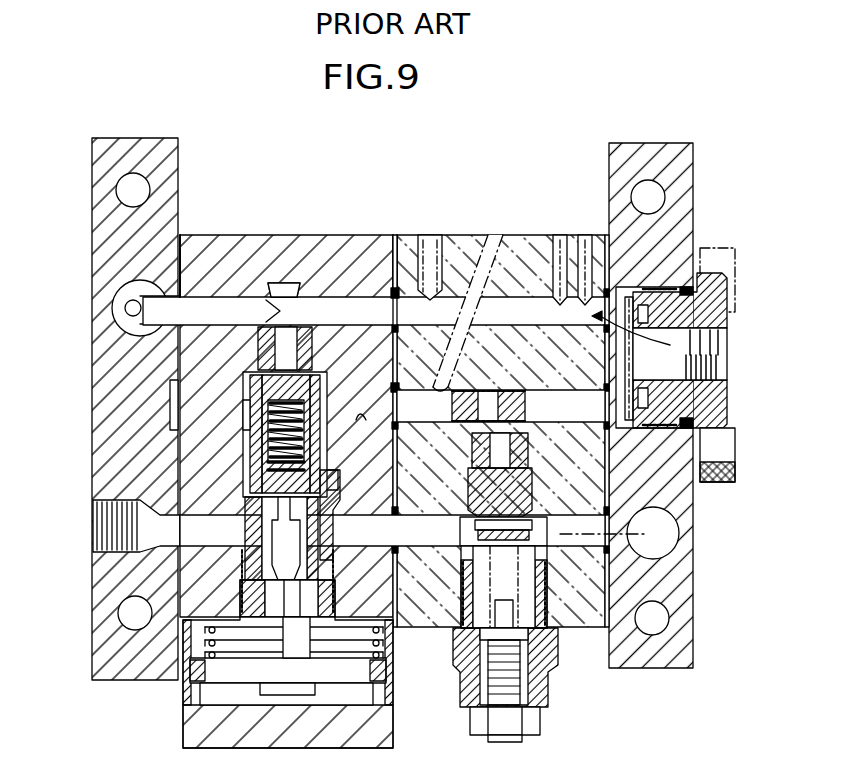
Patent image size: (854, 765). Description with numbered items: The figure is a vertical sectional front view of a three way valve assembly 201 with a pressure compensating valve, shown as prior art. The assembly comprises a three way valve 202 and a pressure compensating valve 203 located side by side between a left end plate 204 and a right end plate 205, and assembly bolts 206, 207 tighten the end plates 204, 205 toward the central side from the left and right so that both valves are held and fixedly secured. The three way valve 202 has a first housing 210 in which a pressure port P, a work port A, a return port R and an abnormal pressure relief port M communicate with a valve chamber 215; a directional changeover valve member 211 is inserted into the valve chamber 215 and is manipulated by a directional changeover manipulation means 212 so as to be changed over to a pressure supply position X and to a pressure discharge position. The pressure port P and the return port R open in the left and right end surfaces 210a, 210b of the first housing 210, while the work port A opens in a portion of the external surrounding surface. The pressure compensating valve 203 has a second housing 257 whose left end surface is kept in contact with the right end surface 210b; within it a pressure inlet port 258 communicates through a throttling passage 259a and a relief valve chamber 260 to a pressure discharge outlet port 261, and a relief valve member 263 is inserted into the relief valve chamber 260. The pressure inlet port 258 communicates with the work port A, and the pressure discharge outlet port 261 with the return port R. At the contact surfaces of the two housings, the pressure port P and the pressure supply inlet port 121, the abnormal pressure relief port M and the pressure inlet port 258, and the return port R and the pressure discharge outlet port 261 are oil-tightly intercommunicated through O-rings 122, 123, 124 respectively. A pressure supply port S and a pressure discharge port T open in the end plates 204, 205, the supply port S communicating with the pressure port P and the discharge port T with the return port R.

The three way valve assembly 201 is at (420, 195).
The three way valve 202 is at (262, 233).
The pressure compensating valve 203 is at (504, 228).
The left end plate 204 is at (140, 138).
The right end plate 205 is at (656, 143).
The assembly bolt 206 is at (712, 250).
The assembly bolt 207 is at (722, 490).
The first housing 210 is at (340, 233).
The left end surface 210a is at (179, 238).
The right end surface 210b is at (396, 242).
The pressure supply inlet port 121 is at (537, 300).
The O-ring 122 is at (393, 290).
The O-ring 123 is at (393, 387).
The O-ring 124 is at (392, 554).
The directional changeover valve member 211 is at (237, 418).
The valve chamber 215 is at (247, 437).
The directional changeover manipulation means 212 is at (185, 710).
The second housing 257 is at (459, 235).
The pressure inlet port 258 is at (426, 424).
The throttling passage 259a is at (480, 390).
The relief valve chamber 260 is at (527, 482).
The pressure discharge outlet port 261 is at (560, 545).
The relief valve member 263 is at (520, 508).
The pressure port P is at (292, 300).
The work port A is at (237, 418).
The abnormal pressure relief port M is at (354, 434).
The return port R is at (344, 488).
The pressure supply port S is at (716, 333).
The pressure discharge port T is at (660, 546).
The pressure supply position X is at (41, 351).